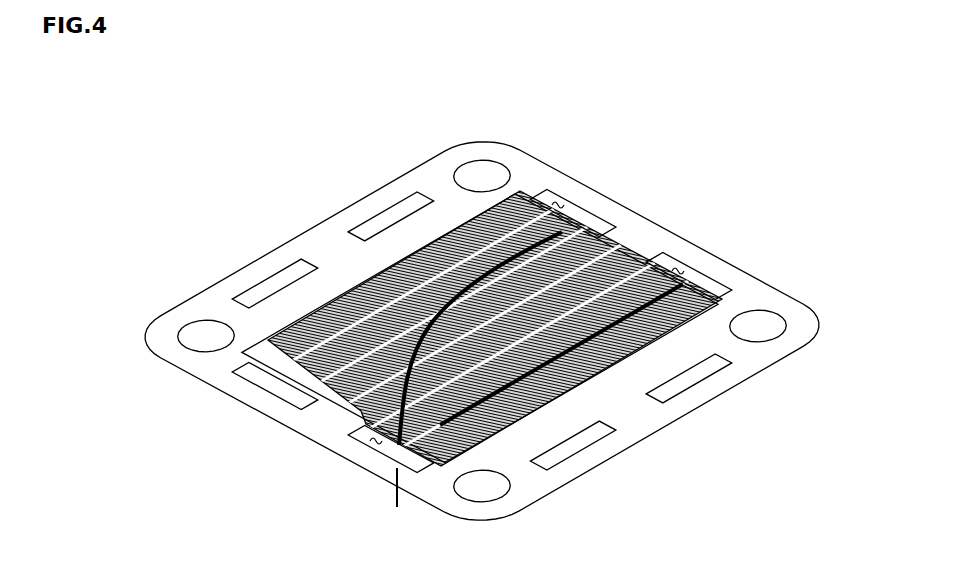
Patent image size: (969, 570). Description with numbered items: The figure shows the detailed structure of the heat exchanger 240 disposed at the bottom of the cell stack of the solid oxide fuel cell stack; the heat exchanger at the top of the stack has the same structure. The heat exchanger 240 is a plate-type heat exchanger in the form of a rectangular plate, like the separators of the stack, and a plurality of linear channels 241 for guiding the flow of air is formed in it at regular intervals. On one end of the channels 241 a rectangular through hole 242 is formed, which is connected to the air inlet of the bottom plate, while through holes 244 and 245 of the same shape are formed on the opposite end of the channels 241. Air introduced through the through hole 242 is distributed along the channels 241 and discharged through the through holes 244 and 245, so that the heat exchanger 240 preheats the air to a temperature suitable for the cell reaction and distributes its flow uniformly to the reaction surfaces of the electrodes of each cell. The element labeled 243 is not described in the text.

The heat exchanger 240 is at (693, 170).
The linear channels 241 is at (535, 422).
The through hole 242 is at (373, 444).
The slot 243 is at (279, 383).
The through hole 244 is at (679, 265).
The through hole 245 is at (563, 200).